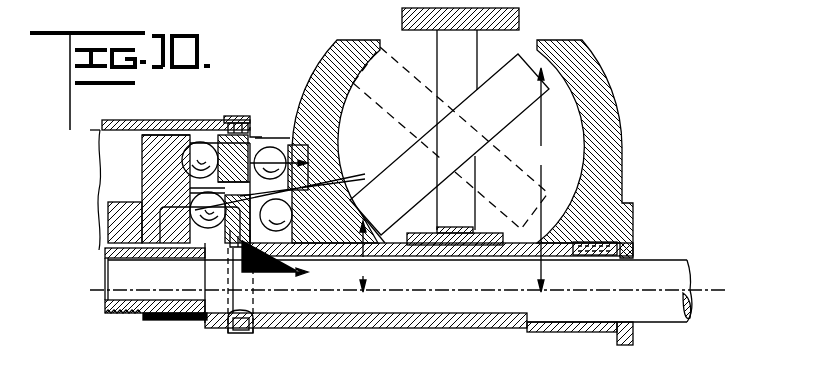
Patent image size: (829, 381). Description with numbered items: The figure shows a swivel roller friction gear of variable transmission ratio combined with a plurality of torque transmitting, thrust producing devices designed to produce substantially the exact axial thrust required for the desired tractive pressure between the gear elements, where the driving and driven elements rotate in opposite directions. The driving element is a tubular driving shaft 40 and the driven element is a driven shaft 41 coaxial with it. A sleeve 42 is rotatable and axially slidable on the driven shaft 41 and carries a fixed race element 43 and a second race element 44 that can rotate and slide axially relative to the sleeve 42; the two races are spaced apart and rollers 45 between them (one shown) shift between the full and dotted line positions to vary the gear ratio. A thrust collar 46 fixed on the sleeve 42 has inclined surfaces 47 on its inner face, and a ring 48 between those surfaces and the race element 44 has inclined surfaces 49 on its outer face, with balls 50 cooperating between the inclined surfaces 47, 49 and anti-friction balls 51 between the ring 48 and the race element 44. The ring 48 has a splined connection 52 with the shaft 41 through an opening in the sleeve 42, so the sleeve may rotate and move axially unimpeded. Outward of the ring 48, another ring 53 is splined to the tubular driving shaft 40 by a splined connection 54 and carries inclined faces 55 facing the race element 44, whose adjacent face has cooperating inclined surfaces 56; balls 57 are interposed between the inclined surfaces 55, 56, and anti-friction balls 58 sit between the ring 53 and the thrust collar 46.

The tubular driving shaft 40 is at (150, 121).
The driven shaft 41 is at (657, 267).
The sleeve 42 is at (527, 330).
The race element 43 is at (607, 142).
The second race element 44 is at (312, 85).
The rollers 45 is at (449, 126).
The thrust collar 46 is at (142, 173).
The inclined surfaces 47 is at (193, 246).
The ring 48 is at (285, 197).
The inclined surfaces 49 is at (342, 166).
The balls 50 is at (219, 283).
The anti-friction balls 51 is at (288, 262).
The splined connection 52 is at (248, 243).
The ring 53 is at (249, 126).
The splined connection 54 is at (237, 117).
The inclined faces 55 is at (253, 135).
The inclined surfaces 56 is at (272, 128).
The balls 57 is at (279, 155).
The anti-friction balls 58 is at (200, 142).